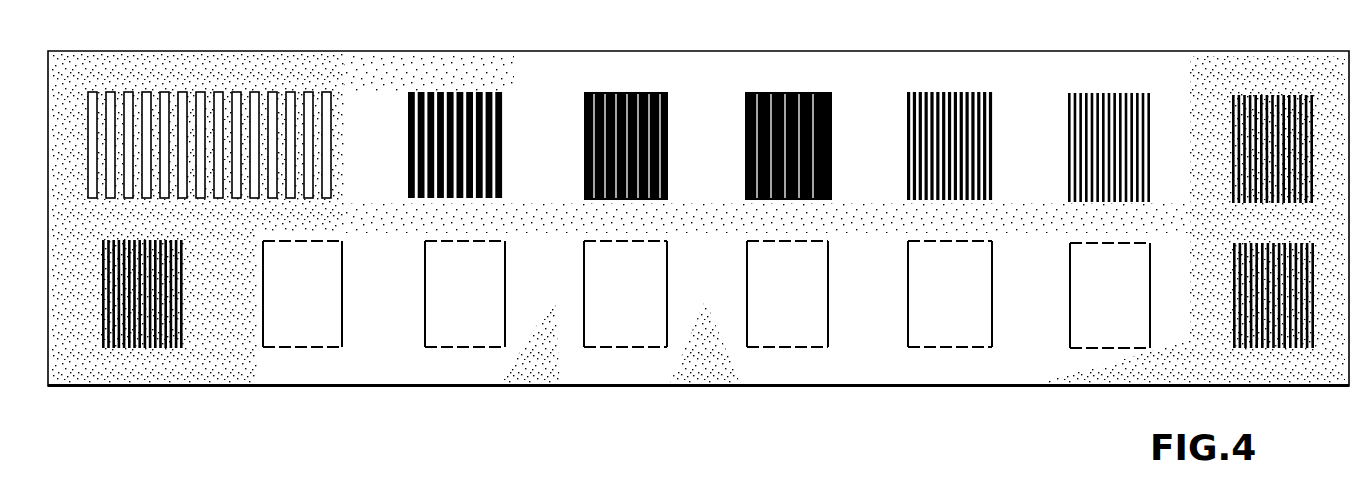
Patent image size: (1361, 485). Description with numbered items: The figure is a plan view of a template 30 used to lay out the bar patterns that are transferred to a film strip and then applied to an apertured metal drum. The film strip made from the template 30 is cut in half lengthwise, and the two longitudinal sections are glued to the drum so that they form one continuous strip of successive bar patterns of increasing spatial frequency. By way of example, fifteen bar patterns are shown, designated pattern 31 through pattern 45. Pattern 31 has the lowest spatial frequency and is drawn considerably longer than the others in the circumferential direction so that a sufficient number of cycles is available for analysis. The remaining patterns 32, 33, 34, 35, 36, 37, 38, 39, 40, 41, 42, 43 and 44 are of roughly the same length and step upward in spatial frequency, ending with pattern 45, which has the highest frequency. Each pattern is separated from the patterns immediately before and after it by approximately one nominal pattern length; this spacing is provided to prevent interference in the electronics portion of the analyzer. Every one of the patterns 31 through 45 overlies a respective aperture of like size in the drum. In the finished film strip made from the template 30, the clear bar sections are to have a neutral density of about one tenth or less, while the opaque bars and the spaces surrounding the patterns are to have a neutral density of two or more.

The template 30 is at (687, 387).
The bar pattern 31 is at (222, 88).
The bar pattern 32 is at (433, 90).
The bar pattern 33 is at (620, 90).
The bar pattern 34 is at (800, 90).
The bar pattern 35 is at (962, 93).
The bar pattern 36 is at (1118, 93).
The bar pattern 37 is at (1287, 97).
The bar pattern 38 is at (1277, 350).
The bar pattern 39 is at (1112, 343).
The bar pattern 40 is at (940, 343).
The bar pattern 41 is at (798, 348).
The bar pattern 42 is at (615, 343).
The bar pattern 43 is at (465, 342).
The bar pattern 44 is at (318, 345).
The bar pattern 45 is at (157, 348).